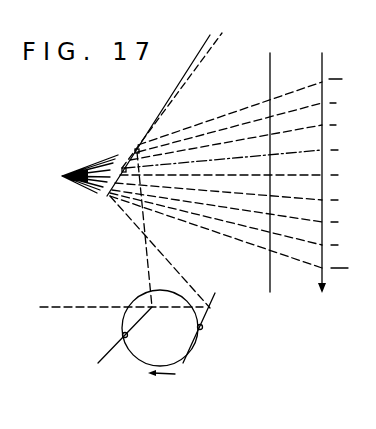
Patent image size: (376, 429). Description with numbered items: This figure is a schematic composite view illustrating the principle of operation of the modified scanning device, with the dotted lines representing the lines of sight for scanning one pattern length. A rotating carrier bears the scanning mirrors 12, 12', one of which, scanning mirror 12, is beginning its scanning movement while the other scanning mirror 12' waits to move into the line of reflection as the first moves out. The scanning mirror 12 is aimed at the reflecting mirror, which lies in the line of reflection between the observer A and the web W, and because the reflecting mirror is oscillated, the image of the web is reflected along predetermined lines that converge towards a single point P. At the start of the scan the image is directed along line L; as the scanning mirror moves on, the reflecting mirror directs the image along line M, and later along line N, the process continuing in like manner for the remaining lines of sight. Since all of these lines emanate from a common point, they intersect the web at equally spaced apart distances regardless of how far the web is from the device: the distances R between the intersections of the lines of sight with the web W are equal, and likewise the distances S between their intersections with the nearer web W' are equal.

The scanning mirror 12 is at (212, 328).
The scanning mirror 12' is at (109, 335).
The single point P is at (78, 174).
The web W is at (322, 164).
The web W' is at (270, 164).
The line L is at (262, 100).
The line M is at (313, 104).
The line N is at (313, 126).
The distances S is at (278, 166).
The distances R is at (332, 104).
The observer A is at (112, 308).